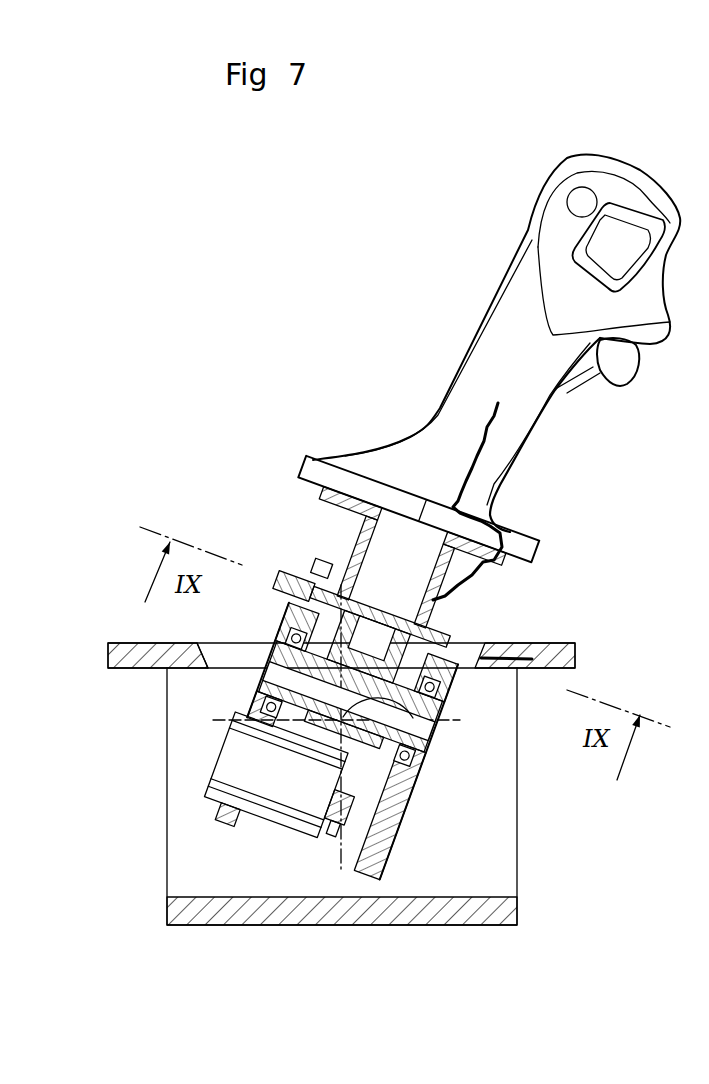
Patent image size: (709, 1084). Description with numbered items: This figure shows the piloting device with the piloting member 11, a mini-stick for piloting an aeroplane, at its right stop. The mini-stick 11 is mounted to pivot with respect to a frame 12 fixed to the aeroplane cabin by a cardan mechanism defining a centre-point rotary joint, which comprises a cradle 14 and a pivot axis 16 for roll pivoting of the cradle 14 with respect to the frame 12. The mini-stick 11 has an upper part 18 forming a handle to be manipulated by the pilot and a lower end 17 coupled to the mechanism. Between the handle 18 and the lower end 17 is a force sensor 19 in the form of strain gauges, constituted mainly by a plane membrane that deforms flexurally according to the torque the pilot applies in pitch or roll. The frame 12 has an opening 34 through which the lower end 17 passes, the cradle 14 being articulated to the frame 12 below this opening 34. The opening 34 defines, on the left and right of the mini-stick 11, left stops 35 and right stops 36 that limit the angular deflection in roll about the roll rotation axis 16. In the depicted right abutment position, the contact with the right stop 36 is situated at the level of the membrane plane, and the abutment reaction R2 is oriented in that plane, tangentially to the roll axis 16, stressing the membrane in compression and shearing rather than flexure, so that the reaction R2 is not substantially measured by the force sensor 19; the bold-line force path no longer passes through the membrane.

The piloting member 11 is at (300, 315).
The frame 12 is at (567, 645).
The cradle 14 is at (462, 787).
The pivot axis 16 is at (437, 728).
The lower end 17 is at (247, 686).
The upper part 18 is at (527, 410).
The force sensor 19 is at (290, 575).
The opening 34 is at (238, 657).
The left stops 35 is at (206, 642).
The right stops 36 is at (480, 637).
The abutment reaction R2 is at (458, 636).